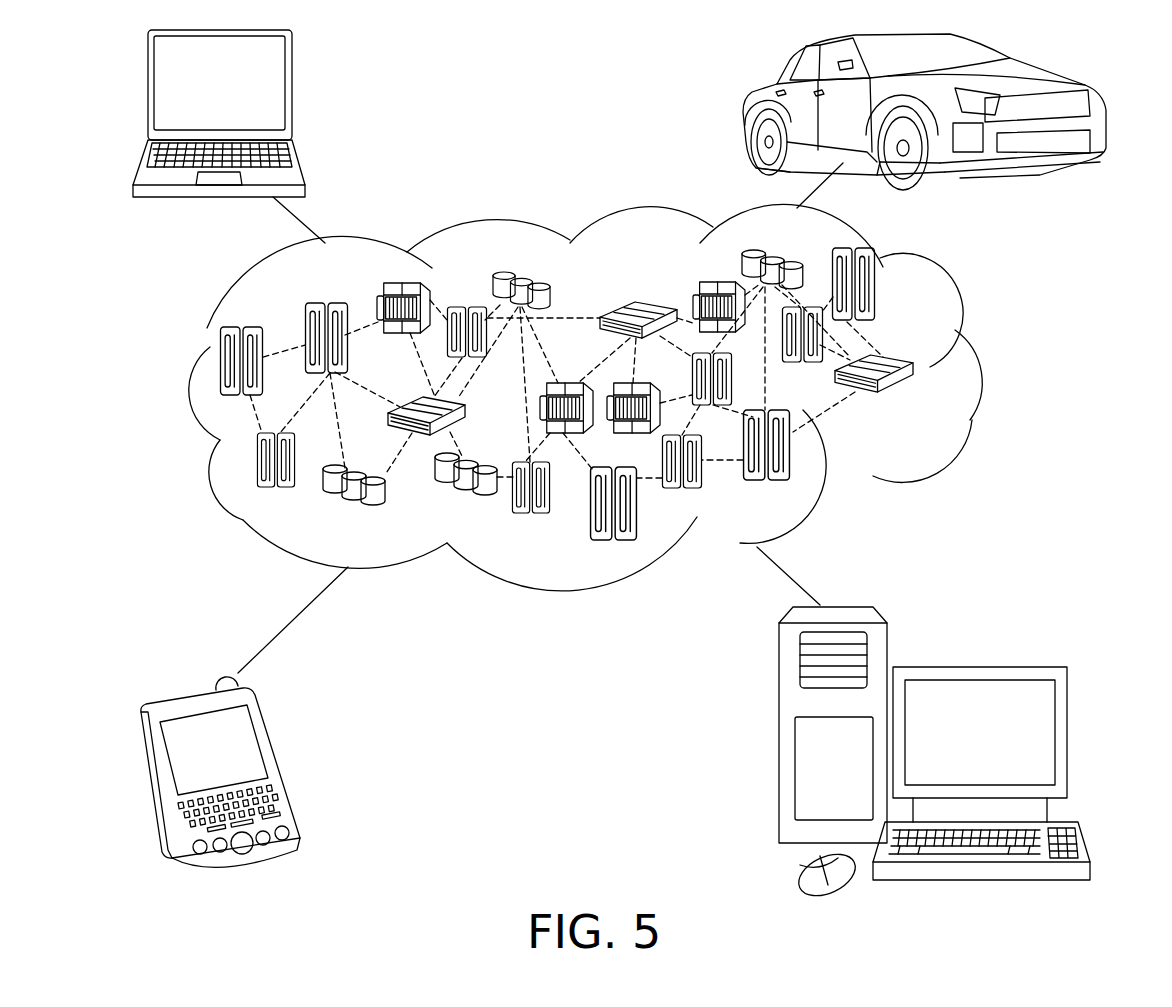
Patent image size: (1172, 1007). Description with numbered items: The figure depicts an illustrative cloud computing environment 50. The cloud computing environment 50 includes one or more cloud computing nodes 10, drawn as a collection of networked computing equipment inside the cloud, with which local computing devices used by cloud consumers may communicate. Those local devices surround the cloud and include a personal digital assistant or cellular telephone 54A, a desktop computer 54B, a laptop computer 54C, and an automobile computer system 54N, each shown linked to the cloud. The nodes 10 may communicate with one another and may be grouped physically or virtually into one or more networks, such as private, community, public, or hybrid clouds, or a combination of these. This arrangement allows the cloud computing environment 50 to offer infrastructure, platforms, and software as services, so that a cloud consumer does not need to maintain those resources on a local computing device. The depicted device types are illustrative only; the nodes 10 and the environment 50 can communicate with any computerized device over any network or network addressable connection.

The cloud computing node 10 is at (915, 402).
The cloud computing environment 50 is at (977, 372).
The personal digital assistant (PDA) or cellular telephone 54A is at (280, 765).
The desktop computer 54B is at (978, 667).
The laptop computer 54C is at (292, 92).
The automobile computer system 54N is at (750, 117).